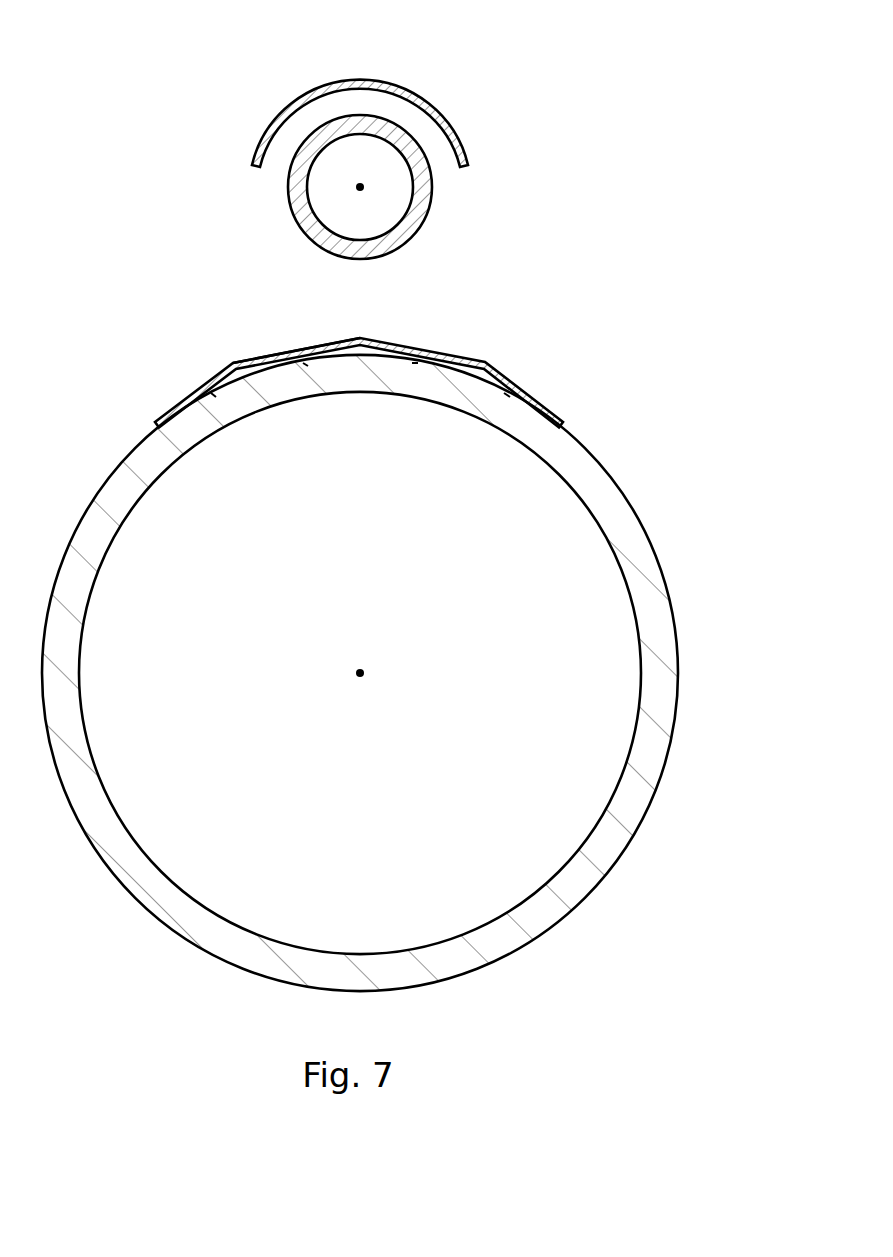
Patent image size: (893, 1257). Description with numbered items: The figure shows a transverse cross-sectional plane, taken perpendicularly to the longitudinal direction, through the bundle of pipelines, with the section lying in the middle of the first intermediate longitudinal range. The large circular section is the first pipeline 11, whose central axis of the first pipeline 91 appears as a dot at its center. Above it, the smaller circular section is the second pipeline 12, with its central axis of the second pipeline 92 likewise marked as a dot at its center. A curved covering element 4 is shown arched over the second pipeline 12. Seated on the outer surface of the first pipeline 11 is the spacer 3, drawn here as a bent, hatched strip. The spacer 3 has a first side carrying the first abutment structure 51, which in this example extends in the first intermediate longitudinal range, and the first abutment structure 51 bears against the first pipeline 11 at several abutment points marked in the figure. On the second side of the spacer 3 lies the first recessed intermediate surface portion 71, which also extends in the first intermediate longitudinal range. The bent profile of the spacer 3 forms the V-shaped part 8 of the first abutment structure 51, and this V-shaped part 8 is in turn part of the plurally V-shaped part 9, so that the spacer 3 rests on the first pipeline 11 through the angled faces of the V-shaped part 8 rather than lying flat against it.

The spacer 3 is at (333, 356).
The covering element 4 is at (360, 80).
The V-shaped part 8 is at (405, 337).
The plurally V-shaped part 9 is at (401, 637).
The first pipeline 11 is at (663, 671).
The second pipeline 12 is at (420, 190).
The first abutment structure 51 is at (214, 398).
The first recessed intermediate surface portion 71 is at (297, 351).
The central axis of the first pipeline 91 is at (364, 672).
The central axis of the second pipeline 92 is at (358, 189).